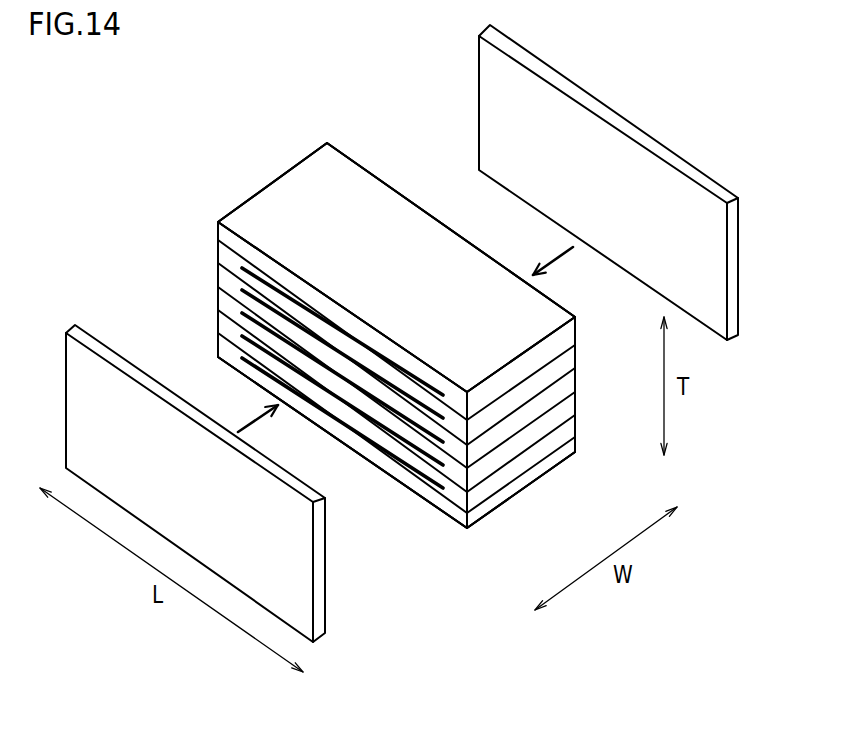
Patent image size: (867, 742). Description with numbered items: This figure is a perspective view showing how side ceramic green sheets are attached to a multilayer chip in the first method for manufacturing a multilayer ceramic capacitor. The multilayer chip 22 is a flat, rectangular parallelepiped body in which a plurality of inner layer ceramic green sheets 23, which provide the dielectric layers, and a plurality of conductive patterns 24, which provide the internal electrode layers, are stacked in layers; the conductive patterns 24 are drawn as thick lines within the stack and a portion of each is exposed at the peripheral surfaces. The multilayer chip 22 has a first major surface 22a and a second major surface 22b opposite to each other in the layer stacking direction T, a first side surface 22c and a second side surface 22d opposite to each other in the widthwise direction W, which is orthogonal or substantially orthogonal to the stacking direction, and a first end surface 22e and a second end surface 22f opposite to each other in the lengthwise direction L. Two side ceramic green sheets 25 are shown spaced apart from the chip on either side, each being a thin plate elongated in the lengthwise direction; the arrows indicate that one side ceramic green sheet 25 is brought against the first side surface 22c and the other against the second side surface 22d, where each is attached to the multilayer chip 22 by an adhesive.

The multilayer chip 22 is at (430, 195).
The first major surface 22a is at (368, 223).
The second major surface 22b is at (397, 438).
The first side surface 22c is at (330, 390).
The second side surface 22d is at (477, 297).
The first end surface 22e is at (287, 217).
The second end surface 22f is at (550, 397).
The inner layer ceramic green sheet 23 is at (548, 443).
The conductive pattern 24 is at (243, 335).
The side ceramic green sheet 25 is at (110, 345).